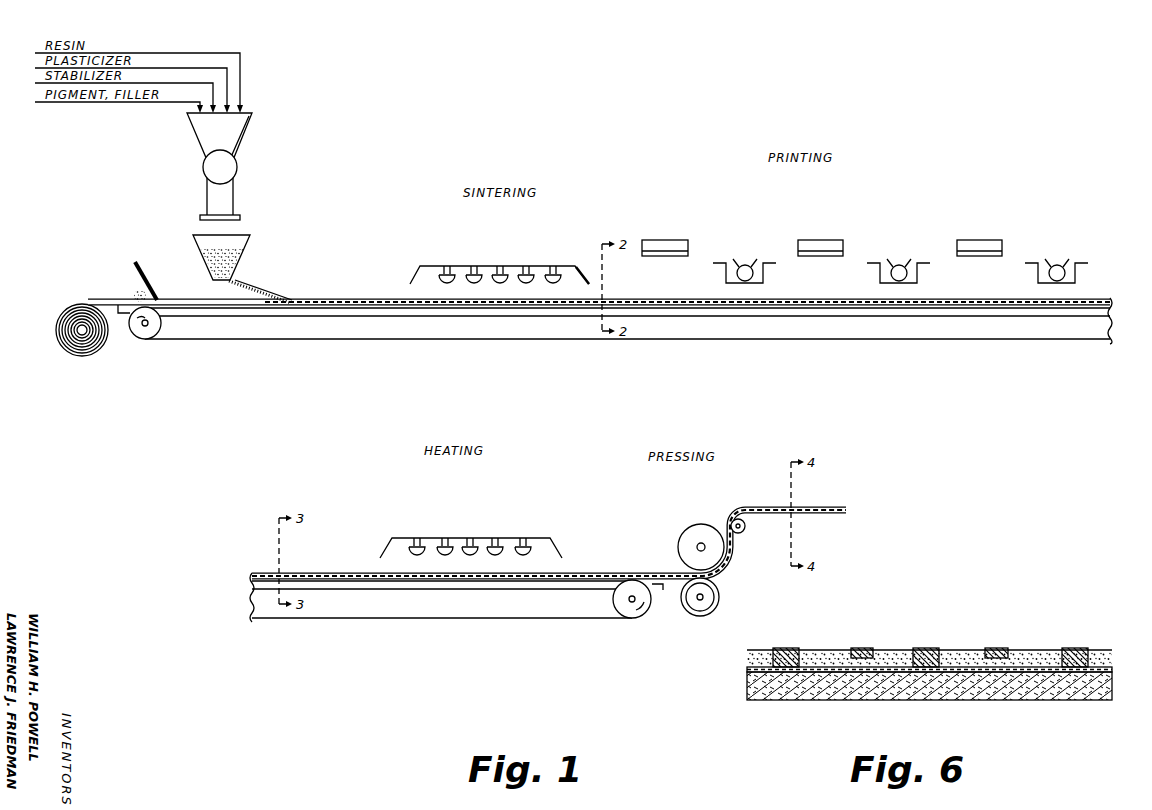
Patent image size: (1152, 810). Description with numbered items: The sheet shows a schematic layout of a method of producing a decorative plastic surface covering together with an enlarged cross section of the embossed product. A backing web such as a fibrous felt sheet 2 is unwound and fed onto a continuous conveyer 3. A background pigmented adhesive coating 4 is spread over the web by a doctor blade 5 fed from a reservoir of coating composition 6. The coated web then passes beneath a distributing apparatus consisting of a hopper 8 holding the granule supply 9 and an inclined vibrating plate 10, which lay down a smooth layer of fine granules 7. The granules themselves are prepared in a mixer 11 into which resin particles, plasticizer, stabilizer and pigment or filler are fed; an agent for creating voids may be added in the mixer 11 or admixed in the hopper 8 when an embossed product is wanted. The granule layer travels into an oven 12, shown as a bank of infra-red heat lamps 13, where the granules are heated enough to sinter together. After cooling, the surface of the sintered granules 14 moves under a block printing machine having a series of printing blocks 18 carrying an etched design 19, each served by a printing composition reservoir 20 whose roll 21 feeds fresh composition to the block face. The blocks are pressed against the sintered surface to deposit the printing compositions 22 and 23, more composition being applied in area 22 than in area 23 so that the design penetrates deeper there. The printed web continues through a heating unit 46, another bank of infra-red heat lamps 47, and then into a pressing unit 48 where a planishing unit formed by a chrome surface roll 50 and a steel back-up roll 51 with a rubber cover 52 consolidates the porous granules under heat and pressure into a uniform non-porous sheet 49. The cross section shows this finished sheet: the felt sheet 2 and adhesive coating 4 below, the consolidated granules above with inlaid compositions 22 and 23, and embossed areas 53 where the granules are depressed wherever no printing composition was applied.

In FIG. 1, the fibrous felt sheet 2 is at (56, 321).
In FIG. 6, the fibrous felt sheet 2 is at (747, 690).
In FIG. 1, the continuous conveyer 3 is at (238, 341).
In FIG. 1, the background pigmented adhesive coating 4 is at (172, 300).
In FIG. 6, the background pigmented adhesive coating 4 is at (747, 668).
In FIG. 1, the doctor blade 5 is at (143, 266).
In FIG. 1, the reservoir of coating composition 6 is at (138, 293).
In FIG. 1, the layer of fine granules 7 is at (313, 299).
In FIG. 1, the hopper 8 is at (244, 257).
In FIG. 1, the granule supply 9 is at (203, 254).
In FIG. 1, the inclined vibrating plate 10 is at (252, 284).
In FIG. 1, the mixer 11 is at (238, 170).
In FIG. 1, the oven 12 is at (462, 244).
In FIG. 1, the infra-red heat lamps 13 is at (506, 272).
In FIG. 1, the sintered granules 14 is at (604, 298).
In FIG. 1, the printing blocks 18 is at (995, 240).
In FIG. 1, the design 19 is at (981, 257).
In FIG. 1, the printing composition reservoirs 20 is at (1091, 277).
In FIG. 1, the roll 21 is at (1055, 262).
In FIG. 1, the printing composition 22 is at (845, 301).
In FIG. 6, the printing composition 22 is at (1074, 648).
In FIG. 1, the printing composition 23 is at (1000, 301).
In FIG. 6, the printing composition 23 is at (1000, 648).
In FIG. 1, the heating unit 46 is at (424, 516).
In FIG. 1, the infra-red heat lamps 47 is at (497, 546).
In FIG. 1, the pressing unit 48 is at (650, 518).
In FIG. 1, the uniform non-porous sheet 49 is at (748, 509).
In FIG. 6, the uniform non-porous sheet 49 is at (1036, 650).
In FIG. 1, the chrome surface roll 50 is at (680, 546).
In FIG. 1, the steel back-up roll 51 is at (713, 601).
In FIG. 1, the rubber cover 52 is at (689, 614).
In FIG. 6, the embossed areas 53 is at (890, 650).